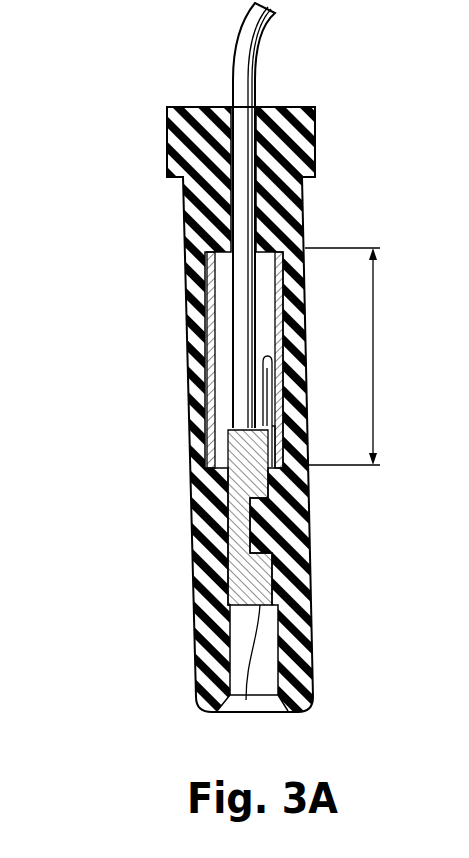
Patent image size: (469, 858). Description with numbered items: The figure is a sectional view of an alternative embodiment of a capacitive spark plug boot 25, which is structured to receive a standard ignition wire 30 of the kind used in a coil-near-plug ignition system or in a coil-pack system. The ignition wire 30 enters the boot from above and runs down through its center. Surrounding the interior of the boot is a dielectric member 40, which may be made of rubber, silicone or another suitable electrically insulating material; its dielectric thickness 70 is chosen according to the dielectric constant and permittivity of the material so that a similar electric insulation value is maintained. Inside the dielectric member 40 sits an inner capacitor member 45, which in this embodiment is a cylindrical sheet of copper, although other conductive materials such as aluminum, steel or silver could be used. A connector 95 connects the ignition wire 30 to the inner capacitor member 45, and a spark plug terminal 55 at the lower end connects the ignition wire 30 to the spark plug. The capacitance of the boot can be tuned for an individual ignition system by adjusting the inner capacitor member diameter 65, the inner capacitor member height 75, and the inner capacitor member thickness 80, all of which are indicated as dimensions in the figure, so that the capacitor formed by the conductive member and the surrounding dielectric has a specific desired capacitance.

The spark plug boot 25 is at (115, 176).
The ignition wire 30 is at (240, 63).
The dielectric member 40 is at (294, 157).
The inner capacitor member 45 is at (213, 417).
The spark plug terminal 55 is at (246, 700).
The inner capacitor member diameter 65 is at (330, 281).
The dielectric thickness 70 is at (255, 393).
The inner capacitor member height 75 is at (375, 378).
The inner capacitor member thickness 80 is at (263, 337).
The connector 95 is at (288, 404).